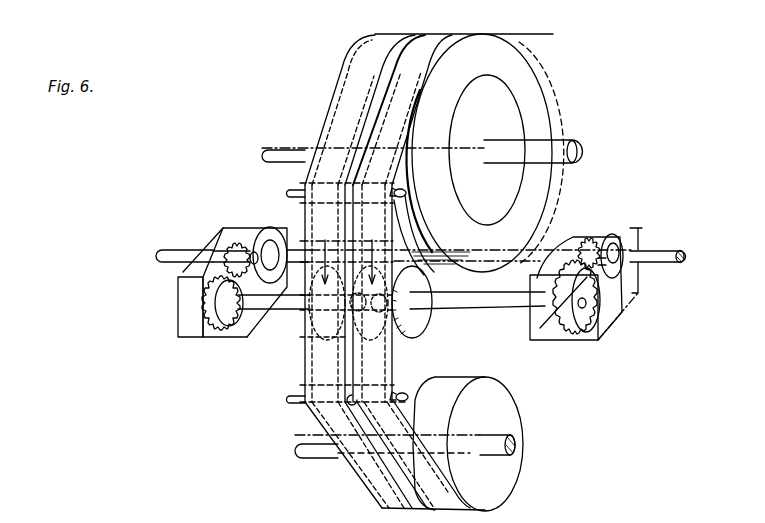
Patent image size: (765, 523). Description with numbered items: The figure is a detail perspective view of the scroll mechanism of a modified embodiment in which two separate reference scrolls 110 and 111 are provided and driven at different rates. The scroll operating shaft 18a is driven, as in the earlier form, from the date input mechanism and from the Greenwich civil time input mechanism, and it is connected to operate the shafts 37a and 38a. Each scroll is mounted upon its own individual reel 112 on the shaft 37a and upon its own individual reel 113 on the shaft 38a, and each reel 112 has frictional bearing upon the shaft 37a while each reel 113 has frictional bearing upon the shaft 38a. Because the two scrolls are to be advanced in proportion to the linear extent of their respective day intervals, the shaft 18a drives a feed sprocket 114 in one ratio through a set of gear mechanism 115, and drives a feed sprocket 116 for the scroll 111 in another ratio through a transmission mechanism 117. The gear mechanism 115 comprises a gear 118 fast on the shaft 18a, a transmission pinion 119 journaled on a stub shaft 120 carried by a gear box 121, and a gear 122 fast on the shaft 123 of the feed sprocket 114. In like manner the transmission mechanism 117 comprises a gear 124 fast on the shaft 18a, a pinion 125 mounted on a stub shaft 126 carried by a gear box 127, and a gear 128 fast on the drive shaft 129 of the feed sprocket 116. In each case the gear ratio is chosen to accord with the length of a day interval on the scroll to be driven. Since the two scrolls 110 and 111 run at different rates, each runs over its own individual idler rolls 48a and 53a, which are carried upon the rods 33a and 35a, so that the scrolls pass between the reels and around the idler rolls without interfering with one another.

The scroll 110 is at (355, 58).
The scroll 111 is at (448, 33).
The reel 112 is at (514, 110).
The reel 113 is at (464, 378).
The feed sprocket 114 is at (310, 342).
The gear mechanism 115 is at (175, 331).
The feed sprocket 116 is at (433, 312).
The transmission mechanism 117 is at (618, 331).
The gear 118 is at (270, 228).
The transmission pinion 119 is at (230, 246).
The stub shaft 120 is at (203, 266).
The gear box 121 is at (182, 302).
The gear 122 is at (232, 326).
The shaft 123 is at (287, 311).
The gear 124 is at (616, 236).
The pinion 125 is at (588, 238).
The stub shaft 126 is at (610, 300).
The gear box 127 is at (644, 292).
The gear 128 is at (580, 334).
The drive shaft 129 is at (513, 309).
The scroll operating shaft 18a is at (168, 248).
The rod 33a is at (296, 192).
The rod 35a is at (296, 400).
The shaft 37a is at (281, 146).
The shaft 38a is at (311, 460).
The idler roll 48a is at (408, 196).
The idler roll 53a is at (404, 392).